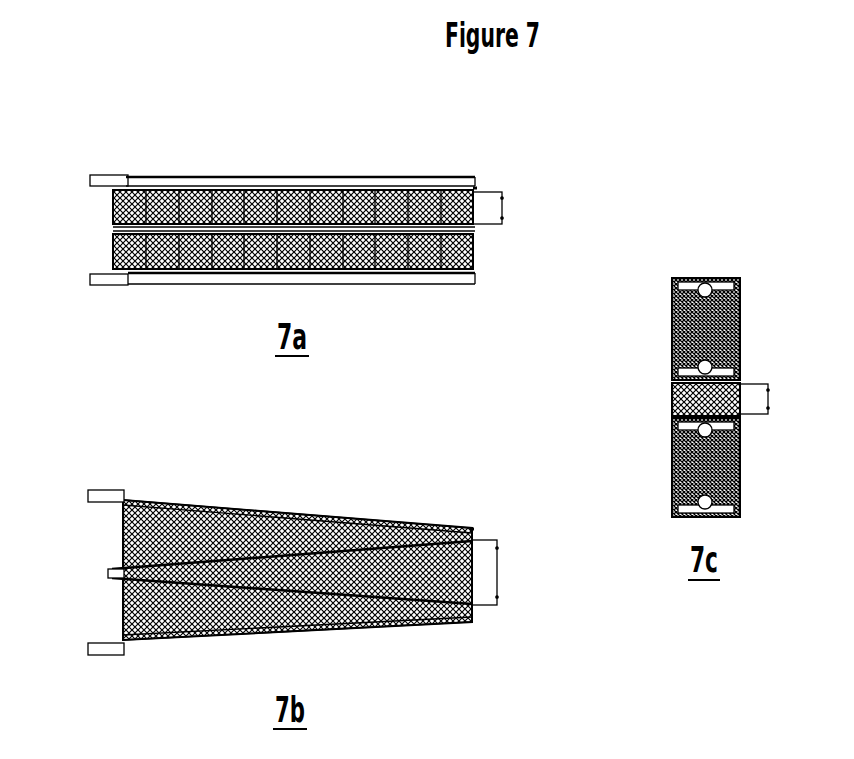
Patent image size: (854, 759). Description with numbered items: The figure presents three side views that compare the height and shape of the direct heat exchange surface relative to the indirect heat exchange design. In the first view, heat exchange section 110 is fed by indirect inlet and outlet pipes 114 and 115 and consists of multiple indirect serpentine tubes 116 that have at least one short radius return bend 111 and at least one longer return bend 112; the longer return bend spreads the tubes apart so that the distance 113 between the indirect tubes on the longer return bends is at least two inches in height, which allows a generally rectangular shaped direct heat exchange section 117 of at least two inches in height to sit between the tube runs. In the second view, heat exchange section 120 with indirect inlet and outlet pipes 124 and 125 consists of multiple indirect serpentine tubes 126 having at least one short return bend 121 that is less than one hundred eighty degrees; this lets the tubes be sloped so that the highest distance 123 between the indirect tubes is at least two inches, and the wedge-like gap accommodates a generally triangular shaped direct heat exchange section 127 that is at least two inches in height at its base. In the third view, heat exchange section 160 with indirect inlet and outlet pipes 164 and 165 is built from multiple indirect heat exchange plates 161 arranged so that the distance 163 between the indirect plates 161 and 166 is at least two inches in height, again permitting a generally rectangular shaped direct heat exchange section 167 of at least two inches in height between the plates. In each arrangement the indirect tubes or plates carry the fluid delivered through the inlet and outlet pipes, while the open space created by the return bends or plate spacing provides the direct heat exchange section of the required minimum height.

In FIG. 7a, the heat exchange section 110 is at (450, 150).
In FIG. 7a, the short radius return bend 111 is at (476, 184).
In FIG. 7a, the longer return bend 112 is at (112, 212).
In FIG. 7a, the distance between indirect tubes on the longer return bends 113 is at (503, 208).
In FIG. 7a, the indirect inlet pipe 114 is at (118, 175).
In FIG. 7a, the indirect outlet pipe 115 is at (110, 285).
In FIG. 7a, the indirect serpentine tubes 116 is at (275, 177).
In FIG. 7a, the direct heat exchange section 117 is at (368, 193).
In FIG. 7b, the heat exchange section 120 is at (440, 497).
In FIG. 7b, the short return bend 121 is at (475, 527).
In FIG. 7b, the highest distance between the indirect tubes 123 is at (498, 572).
In FIG. 7b, the indirect inlet pipe 124 is at (112, 490).
In FIG. 7b, the indirect outlet pipe 125 is at (110, 655).
In FIG. 7b, the indirect serpentine tubes 126 is at (330, 514).
In FIG. 7b, the direct heat exchange section 127 is at (243, 505).
In FIG. 7c, the heat exchange section 160 is at (718, 252).
In FIG. 7c, the indirect heat exchange plates 161 is at (708, 313).
In FIG. 7c, the distance between indirect plates 163 is at (769, 398).
In FIG. 7c, the indirect inlet pipe 164 is at (674, 284).
In FIG. 7c, the indirect outlet pipe 165 is at (674, 352).
In FIG. 7c, the indirect heat exchange plate 166 is at (741, 476).
In FIG. 7c, the direct heat exchange section 167 is at (672, 397).